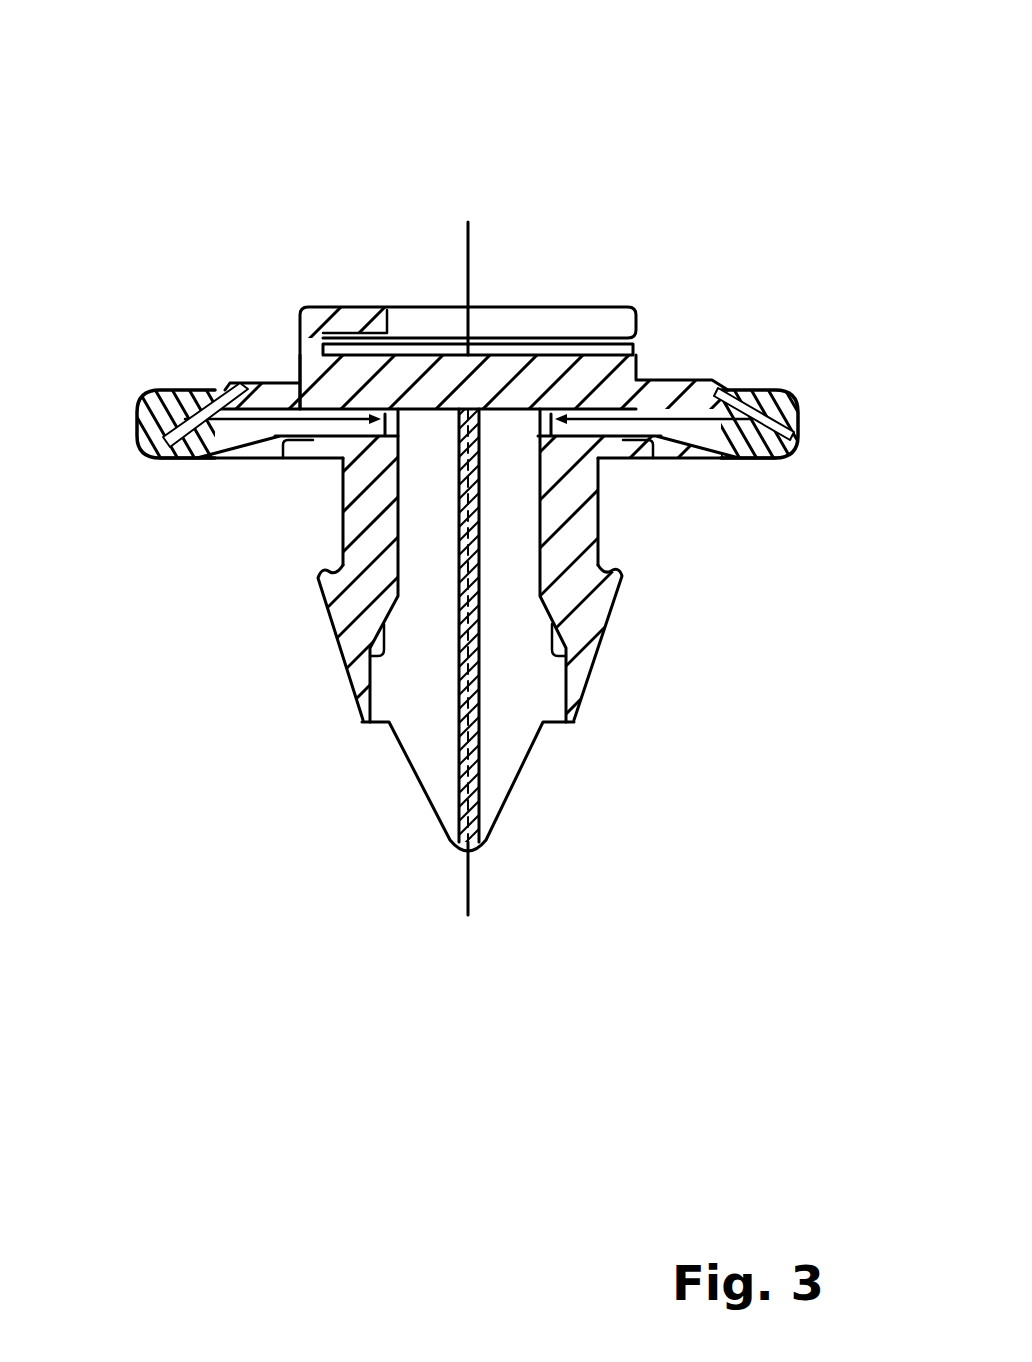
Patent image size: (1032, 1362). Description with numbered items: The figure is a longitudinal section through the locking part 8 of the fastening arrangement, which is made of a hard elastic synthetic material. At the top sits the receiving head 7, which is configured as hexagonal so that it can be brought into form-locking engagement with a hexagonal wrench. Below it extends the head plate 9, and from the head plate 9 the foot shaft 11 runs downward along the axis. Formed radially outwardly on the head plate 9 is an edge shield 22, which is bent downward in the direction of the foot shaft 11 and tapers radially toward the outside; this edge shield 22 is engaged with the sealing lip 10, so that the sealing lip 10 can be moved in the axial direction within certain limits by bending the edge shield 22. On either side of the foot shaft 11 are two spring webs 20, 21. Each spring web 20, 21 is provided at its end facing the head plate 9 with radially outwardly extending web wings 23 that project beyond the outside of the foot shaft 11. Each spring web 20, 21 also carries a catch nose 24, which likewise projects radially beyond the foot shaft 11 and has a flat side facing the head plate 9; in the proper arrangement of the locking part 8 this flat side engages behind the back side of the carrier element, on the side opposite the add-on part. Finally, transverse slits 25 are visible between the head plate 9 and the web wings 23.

The receiving head 7 is at (346, 318).
The locking part 8 is at (525, 272).
The head plate 9 is at (668, 398).
The sealing lip 10 is at (150, 435).
The foot shaft 11 is at (411, 690).
The spring web 20 is at (358, 500).
The spring web 21 is at (578, 520).
The edge shield 22 is at (214, 408).
The web wings 23 is at (312, 455).
The catch nose 24 is at (326, 558).
The transverse slits 25 is at (764, 398).